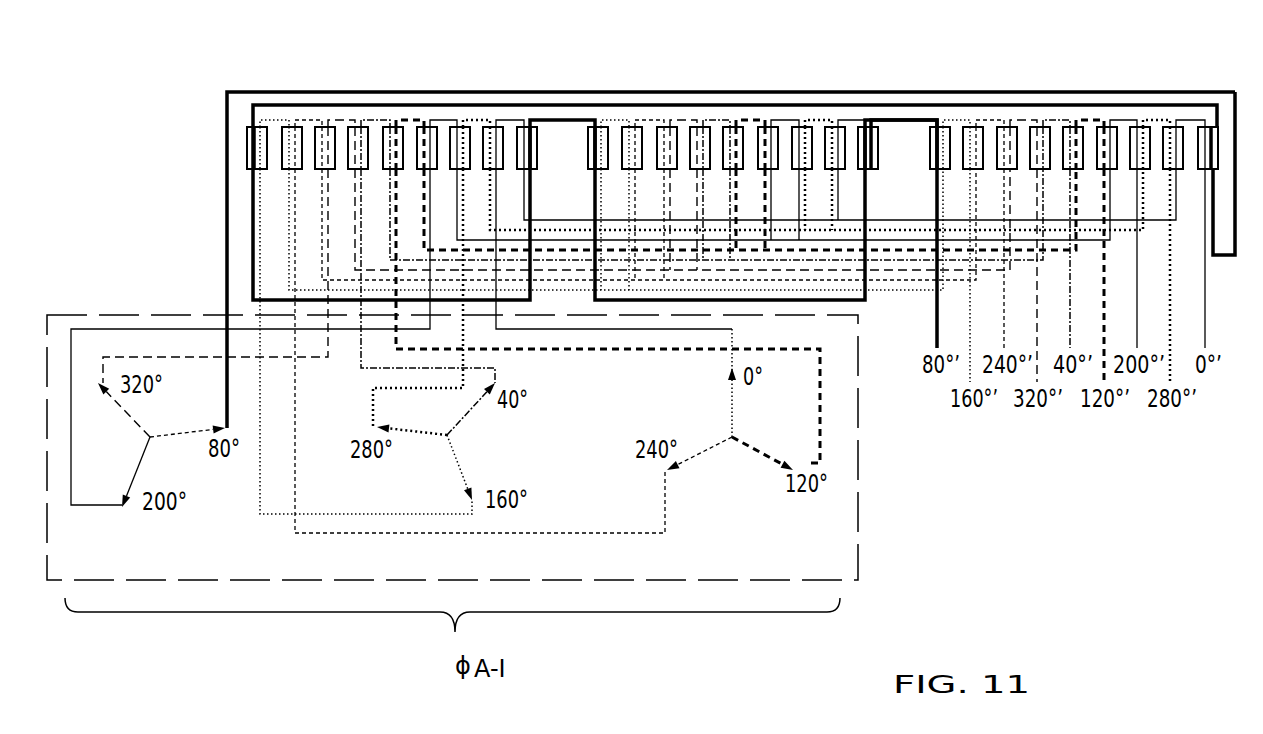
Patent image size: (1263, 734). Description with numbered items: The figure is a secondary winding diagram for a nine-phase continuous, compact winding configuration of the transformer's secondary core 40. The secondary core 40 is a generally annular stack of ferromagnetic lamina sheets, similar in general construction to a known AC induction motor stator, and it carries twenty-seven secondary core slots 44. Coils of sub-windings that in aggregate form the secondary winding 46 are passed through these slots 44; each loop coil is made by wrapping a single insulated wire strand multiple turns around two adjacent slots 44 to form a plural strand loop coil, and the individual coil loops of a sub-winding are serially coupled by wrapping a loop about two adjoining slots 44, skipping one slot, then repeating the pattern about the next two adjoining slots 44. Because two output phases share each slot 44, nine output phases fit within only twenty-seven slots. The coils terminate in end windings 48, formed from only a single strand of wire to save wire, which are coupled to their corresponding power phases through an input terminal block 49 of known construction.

The secondary core 40 is at (752, 80).
The secondary core slots 44 is at (1217, 133).
The secondary winding 46 is at (937, 183).
The end windings 48 is at (985, 92).
The input terminal block 49 is at (858, 470).